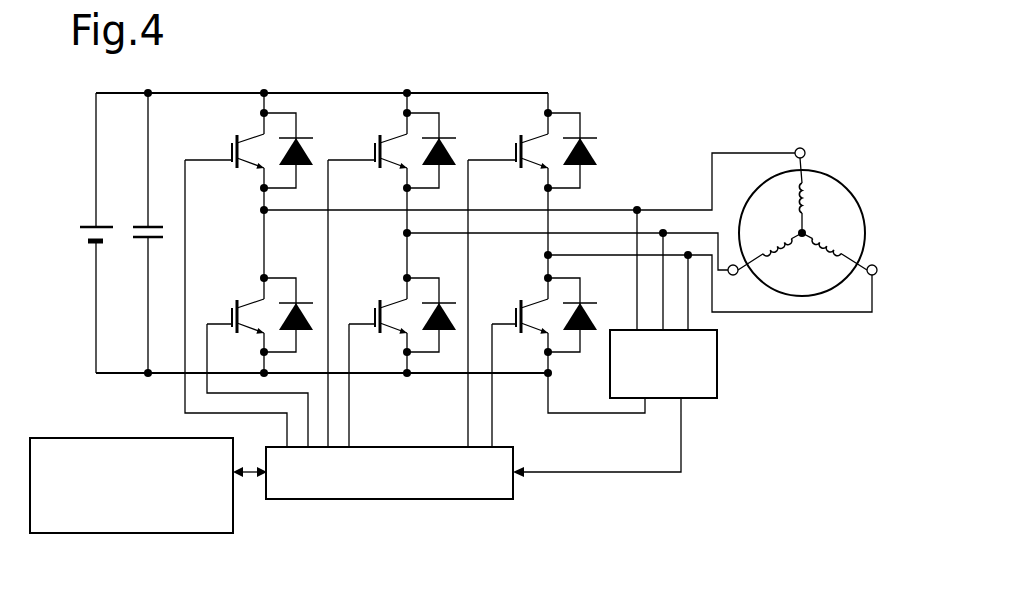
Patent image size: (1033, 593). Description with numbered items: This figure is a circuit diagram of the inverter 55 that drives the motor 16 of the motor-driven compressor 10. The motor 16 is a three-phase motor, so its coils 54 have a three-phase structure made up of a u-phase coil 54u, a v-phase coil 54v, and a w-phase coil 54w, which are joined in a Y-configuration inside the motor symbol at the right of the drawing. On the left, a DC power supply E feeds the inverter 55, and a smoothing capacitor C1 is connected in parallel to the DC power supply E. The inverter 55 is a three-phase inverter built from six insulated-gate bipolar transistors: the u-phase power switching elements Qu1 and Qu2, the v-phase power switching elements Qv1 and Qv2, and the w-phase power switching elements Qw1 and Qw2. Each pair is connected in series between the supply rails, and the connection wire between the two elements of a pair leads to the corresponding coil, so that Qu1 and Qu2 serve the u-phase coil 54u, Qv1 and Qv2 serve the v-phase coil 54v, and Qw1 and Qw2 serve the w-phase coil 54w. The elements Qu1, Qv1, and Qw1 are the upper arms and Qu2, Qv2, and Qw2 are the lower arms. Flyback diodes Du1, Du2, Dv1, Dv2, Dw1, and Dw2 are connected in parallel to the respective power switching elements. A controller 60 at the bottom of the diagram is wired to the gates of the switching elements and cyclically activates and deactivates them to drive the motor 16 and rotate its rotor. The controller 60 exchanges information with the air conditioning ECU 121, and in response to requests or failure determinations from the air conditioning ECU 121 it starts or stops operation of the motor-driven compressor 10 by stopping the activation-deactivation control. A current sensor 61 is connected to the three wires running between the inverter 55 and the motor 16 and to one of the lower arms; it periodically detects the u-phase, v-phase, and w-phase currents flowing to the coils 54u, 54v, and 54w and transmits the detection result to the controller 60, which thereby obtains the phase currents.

The motor-driven compressor 10 is at (824, 68).
The motor 16 is at (835, 179).
The coils 54 is at (862, 368).
The u-phase coil 54u is at (816, 208).
The v-phase coil 54v is at (780, 243).
The w-phase coil 54w is at (822, 258).
The inverter 55 is at (629, 89).
The controller 60 is at (514, 457).
The current sensor 61 is at (700, 399).
The air conditioning ECU 121 is at (98, 438).
The DC power supply E is at (95, 246).
The smoothing capacitor C1 is at (157, 242).
The u-phase power switching element Qu1 is at (232, 148).
The u-phase power switching element Qu2 is at (228, 312).
The v-phase power switching element Qv1 is at (375, 150).
The v-phase power switching element Qv2 is at (375, 318).
The w-phase power switching element Qw1 is at (516, 150).
The w-phase power switching element Qw2 is at (516, 318).
The flyback diode Du1 is at (307, 150).
The flyback diode Du2 is at (305, 308).
The flyback diode Dv1 is at (455, 152).
The flyback diode Dv2 is at (456, 310).
The flyback diode Dw1 is at (597, 150).
The flyback diode Dw2 is at (598, 308).